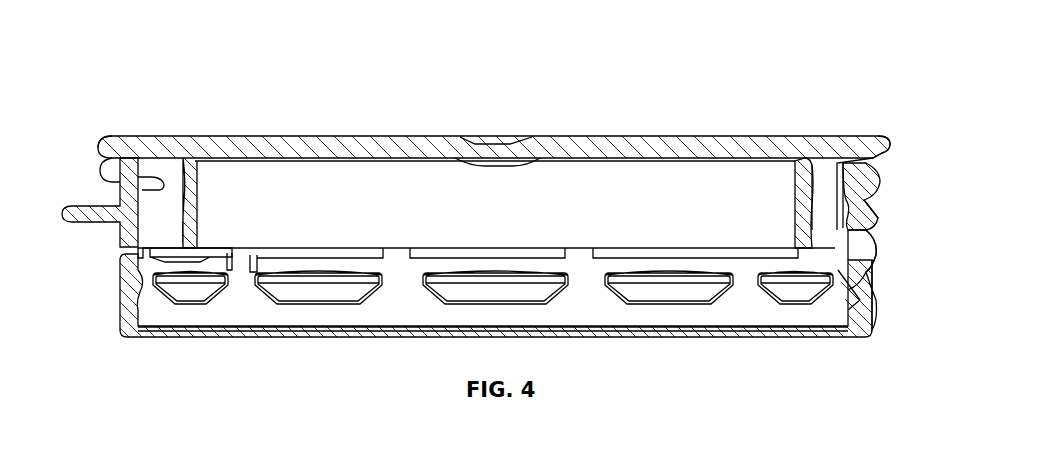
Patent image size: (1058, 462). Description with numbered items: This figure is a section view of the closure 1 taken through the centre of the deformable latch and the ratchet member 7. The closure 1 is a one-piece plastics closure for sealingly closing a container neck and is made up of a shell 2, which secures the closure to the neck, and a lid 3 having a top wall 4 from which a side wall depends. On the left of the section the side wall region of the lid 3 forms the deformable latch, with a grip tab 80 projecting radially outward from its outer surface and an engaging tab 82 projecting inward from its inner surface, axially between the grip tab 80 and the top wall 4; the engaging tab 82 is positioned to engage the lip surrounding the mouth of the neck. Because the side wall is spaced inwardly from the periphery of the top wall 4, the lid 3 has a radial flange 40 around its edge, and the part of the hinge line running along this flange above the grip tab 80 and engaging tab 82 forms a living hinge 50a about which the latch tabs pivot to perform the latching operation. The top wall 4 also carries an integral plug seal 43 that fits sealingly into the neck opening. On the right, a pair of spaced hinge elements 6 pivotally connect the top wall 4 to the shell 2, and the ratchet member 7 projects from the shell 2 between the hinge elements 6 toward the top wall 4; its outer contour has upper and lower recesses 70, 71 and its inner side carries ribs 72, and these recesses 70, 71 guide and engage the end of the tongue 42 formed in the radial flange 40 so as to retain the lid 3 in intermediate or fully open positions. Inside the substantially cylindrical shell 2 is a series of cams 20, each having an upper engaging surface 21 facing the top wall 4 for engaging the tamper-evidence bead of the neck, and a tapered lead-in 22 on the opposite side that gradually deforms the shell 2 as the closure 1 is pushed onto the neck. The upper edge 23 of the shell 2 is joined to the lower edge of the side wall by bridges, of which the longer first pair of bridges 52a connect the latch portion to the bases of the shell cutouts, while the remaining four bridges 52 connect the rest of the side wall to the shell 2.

The closure 1 is at (832, 68).
The shell 2 is at (127, 316).
The lid 3 is at (652, 124).
The top wall 4 is at (368, 140).
The hinge elements 6 is at (822, 194).
The ratchet member 7 is at (905, 199).
The cams 20 is at (149, 312).
The engaging surface 21 is at (313, 282).
The tapered lead-in 22 is at (505, 293).
The upper edge 23 is at (648, 257).
The radial flange 40 is at (112, 142).
The tongue 42 is at (876, 142).
The plug seal 43 is at (537, 207).
The living hinge 50a is at (123, 168).
The bridges 52 is at (395, 255).
The first pair of bridges 52a is at (240, 248).
The upper recess 70 is at (868, 216).
The lower recess 71 is at (866, 258).
The ribs 72 is at (838, 205).
The grip tab 80 is at (78, 209).
The engaging tab 82 is at (170, 184).